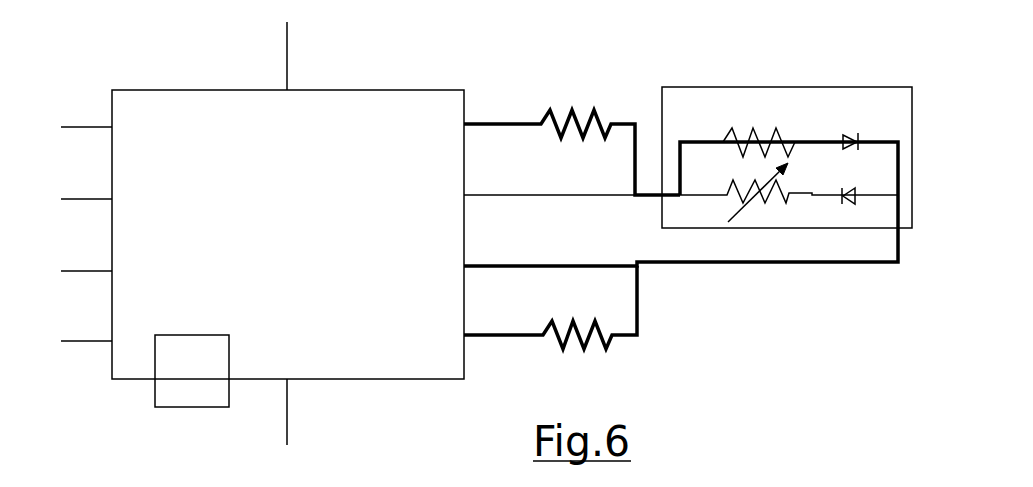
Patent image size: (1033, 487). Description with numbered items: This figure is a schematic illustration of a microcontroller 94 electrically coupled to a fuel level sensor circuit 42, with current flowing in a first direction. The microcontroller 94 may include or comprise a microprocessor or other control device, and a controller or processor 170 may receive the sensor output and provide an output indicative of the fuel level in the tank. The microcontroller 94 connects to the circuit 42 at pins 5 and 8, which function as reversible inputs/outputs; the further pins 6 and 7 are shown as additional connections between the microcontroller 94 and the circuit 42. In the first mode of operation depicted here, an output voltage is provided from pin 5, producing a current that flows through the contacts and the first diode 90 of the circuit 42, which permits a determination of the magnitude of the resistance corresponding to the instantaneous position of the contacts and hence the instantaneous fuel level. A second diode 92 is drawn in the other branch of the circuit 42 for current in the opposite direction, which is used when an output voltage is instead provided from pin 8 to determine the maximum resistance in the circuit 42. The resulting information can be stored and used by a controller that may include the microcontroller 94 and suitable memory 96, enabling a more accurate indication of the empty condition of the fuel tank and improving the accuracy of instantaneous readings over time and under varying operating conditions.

The pin 5 is at (466, 123).
The second electrical line 6 is at (466, 195).
The third electrical line 7 is at (466, 265).
The pin 8 is at (466, 335).
The fuel level sensor circuit 42 is at (903, 97).
The first diode 90 is at (846, 136).
The second diode 92 is at (845, 191).
The microcontroller 94 is at (269, 233).
The controller or processor 170 is at (353, 100).
The memory 96 is at (198, 398).